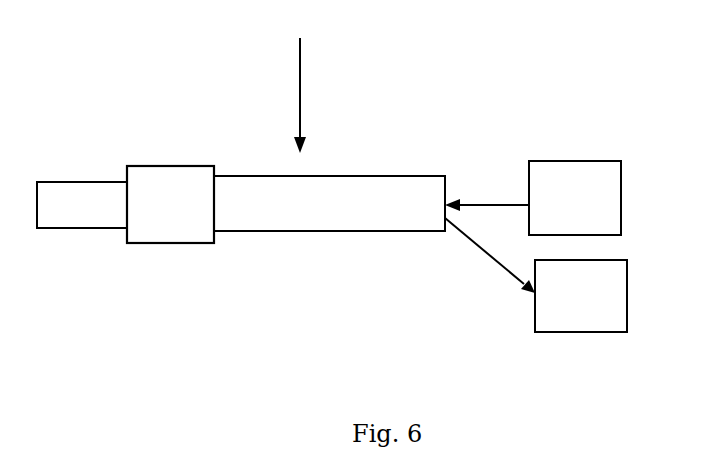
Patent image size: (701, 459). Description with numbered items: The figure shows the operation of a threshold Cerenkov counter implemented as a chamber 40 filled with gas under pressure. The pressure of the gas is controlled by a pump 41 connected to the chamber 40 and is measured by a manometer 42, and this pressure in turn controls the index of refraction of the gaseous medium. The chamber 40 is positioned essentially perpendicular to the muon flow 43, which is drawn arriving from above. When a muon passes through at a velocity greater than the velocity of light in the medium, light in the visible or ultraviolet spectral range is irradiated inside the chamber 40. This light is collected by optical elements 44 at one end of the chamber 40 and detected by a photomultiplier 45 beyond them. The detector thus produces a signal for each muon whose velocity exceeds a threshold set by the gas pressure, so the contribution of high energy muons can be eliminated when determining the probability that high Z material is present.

The chamber 40 is at (329, 203).
The pump 41 is at (533, 198).
The manometer 42 is at (536, 275).
The muon flow 43 is at (315, 95).
The optical elements 44 is at (170, 204).
The photomultiplier 45 is at (82, 205).